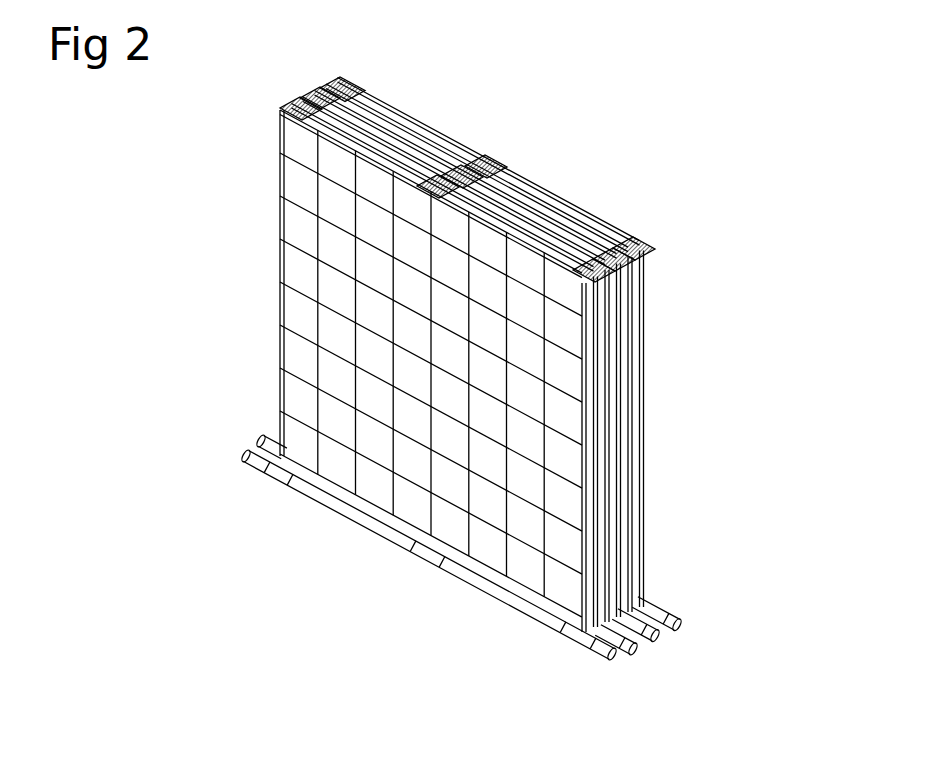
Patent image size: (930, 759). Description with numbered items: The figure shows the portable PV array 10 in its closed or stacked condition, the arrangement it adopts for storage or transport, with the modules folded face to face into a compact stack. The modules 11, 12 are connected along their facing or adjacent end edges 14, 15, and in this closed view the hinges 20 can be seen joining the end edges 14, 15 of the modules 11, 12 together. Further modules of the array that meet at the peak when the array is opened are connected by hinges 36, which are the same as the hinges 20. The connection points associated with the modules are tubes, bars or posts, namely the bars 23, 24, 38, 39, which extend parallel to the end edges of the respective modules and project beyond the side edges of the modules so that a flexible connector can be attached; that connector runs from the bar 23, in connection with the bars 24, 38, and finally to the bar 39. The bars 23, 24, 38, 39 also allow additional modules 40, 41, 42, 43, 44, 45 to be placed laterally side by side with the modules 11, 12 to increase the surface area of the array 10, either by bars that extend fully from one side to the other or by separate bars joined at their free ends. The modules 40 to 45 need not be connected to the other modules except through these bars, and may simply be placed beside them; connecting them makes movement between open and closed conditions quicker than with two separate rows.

The PV array 10 is at (624, 116).
The module 11 is at (535, 538).
The module 12 is at (595, 235).
The end edge 14 is at (350, 267).
The end edge 15 is at (545, 214).
The hinge 20 is at (450, 193).
The bar 23 is at (583, 652).
The bar 24 is at (668, 648).
The hinge 36 is at (505, 180).
The bar 38 is at (660, 638).
The bar 39 is at (680, 625).
The module 40 is at (303, 350).
The module 41 is at (318, 135).
The module 42 is at (282, 106).
The module 43 is at (358, 113).
The module 44 is at (320, 113).
The module 45 is at (363, 97).